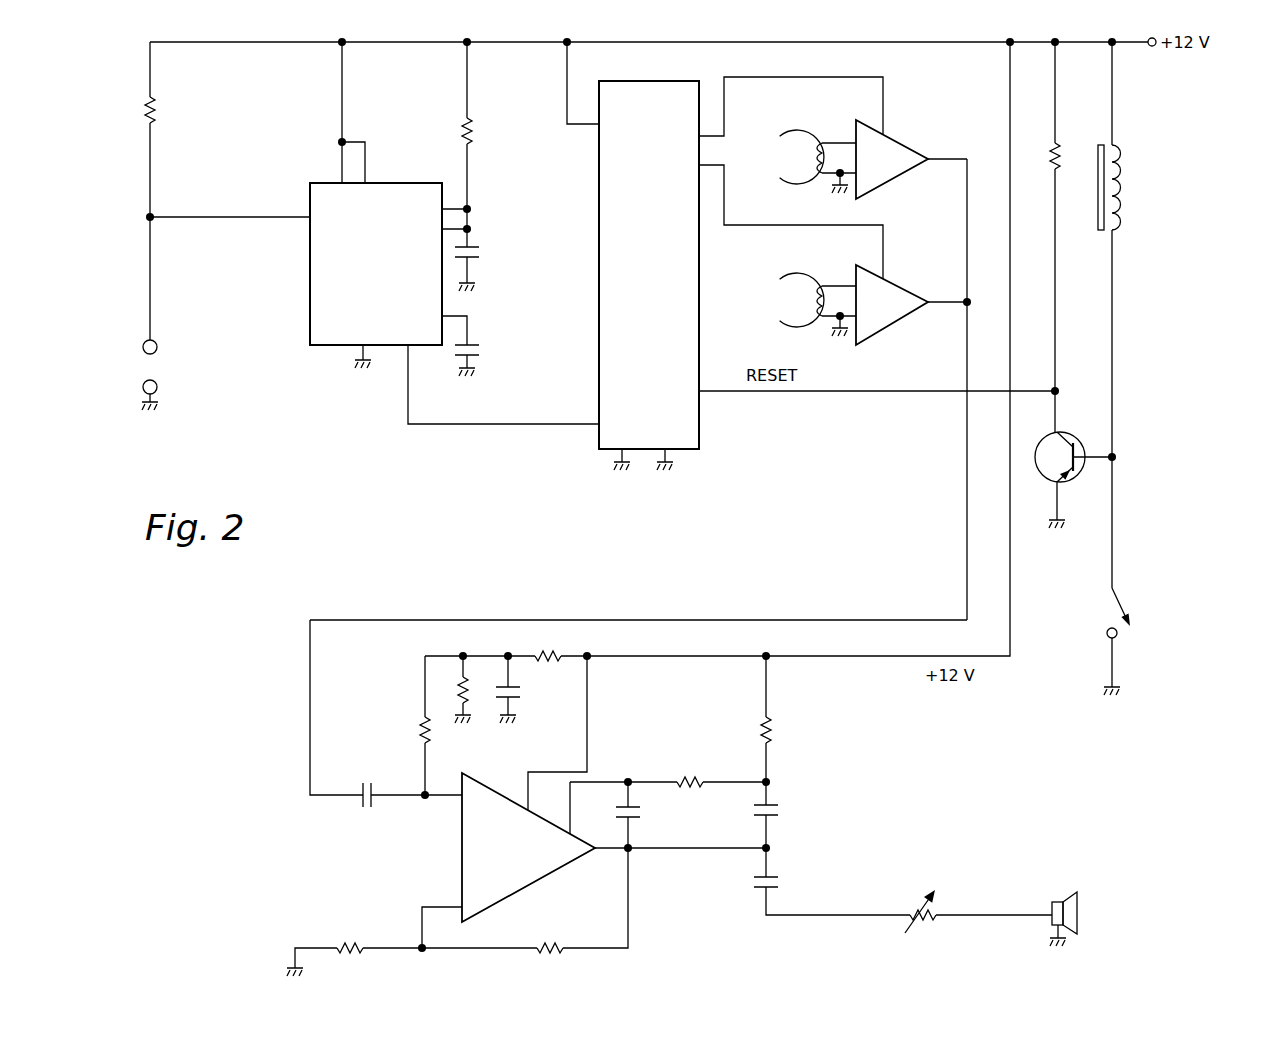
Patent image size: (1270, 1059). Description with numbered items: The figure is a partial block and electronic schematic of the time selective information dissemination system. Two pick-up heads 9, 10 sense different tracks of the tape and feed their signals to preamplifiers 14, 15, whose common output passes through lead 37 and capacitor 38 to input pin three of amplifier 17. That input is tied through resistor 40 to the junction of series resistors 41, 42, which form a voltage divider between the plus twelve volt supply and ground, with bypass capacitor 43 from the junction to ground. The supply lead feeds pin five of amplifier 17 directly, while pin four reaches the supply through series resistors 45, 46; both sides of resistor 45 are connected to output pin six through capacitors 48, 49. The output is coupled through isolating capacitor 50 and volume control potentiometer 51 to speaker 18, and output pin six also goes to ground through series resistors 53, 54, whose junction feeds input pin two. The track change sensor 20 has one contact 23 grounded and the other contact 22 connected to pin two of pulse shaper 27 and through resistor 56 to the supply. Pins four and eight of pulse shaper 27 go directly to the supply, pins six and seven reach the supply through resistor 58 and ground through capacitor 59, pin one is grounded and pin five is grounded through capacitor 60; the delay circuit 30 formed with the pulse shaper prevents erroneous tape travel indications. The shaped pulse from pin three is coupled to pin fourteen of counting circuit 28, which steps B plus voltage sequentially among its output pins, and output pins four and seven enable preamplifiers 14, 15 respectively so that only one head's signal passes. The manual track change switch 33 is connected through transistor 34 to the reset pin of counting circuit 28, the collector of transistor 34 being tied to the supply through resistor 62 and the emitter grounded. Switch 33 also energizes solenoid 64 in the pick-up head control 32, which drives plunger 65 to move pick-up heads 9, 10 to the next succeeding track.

The pick-up head 9 is at (805, 131).
The pick-up head 10 is at (814, 276).
The preamplifier 14 is at (919, 134).
The preamplifier 15 is at (919, 278).
The amplifier 17 is at (462, 858).
The speaker 18 is at (1071, 892).
The tape travel indicating sensor 20 is at (164, 347).
The sensing contact 22 is at (142, 348).
The sensing contact 23 is at (142, 387).
The pulse shaper 27 is at (386, 272).
The counting circuit 28 is at (660, 278).
The delay circuit 30 is at (470, 209).
The pick-up head control 32 is at (1144, 315).
The manual track change switch 33 is at (1110, 608).
The transistor 34 is at (1077, 436).
The lead 37 is at (493, 598).
The capacitor 38 is at (372, 766).
The resistor 40 is at (420, 740).
The resistor 41 is at (549, 652).
The resistor 42 is at (458, 698).
The bypass capacitor 43 is at (531, 696).
The resistor 45 is at (691, 780).
The resistor 46 is at (774, 726).
The capacitor 48 is at (646, 814).
The capacitor 49 is at (784, 807).
The isolating capacitor 50 is at (787, 874).
The volume control potentiometer 51 is at (916, 899).
The resistor 53 is at (561, 946).
The resistor 54 is at (364, 946).
The resistor 56 is at (146, 113).
The resistor 58 is at (454, 135).
The capacitor 59 is at (480, 250).
The capacitor 60 is at (484, 344).
The resistor 62 is at (1054, 164).
The solenoid 64 is at (1122, 147).
The plunger 65 is at (1098, 204).